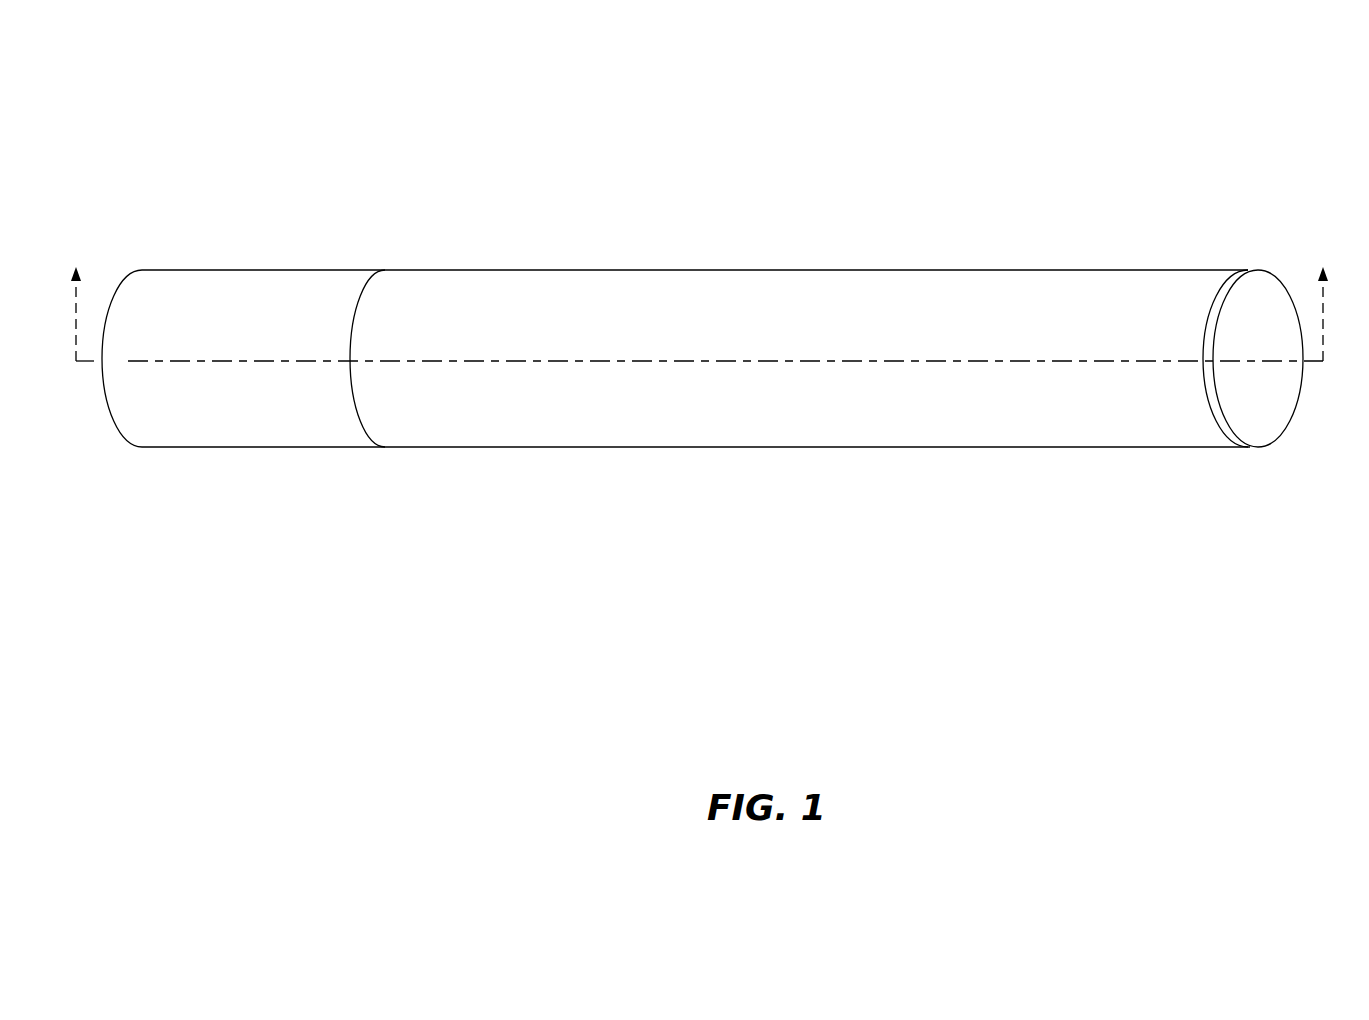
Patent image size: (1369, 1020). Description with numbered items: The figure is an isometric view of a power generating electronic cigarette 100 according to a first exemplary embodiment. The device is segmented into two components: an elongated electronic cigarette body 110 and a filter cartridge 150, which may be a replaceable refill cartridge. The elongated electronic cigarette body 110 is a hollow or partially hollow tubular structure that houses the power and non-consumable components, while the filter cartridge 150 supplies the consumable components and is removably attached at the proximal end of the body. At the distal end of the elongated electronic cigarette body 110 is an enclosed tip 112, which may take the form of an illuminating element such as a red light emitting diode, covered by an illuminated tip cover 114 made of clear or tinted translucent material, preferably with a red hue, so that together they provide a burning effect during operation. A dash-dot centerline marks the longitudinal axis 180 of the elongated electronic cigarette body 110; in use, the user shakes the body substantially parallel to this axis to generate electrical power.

The power generating electronic cigarette 100 is at (719, 280).
The elongated electronic cigarette body 110 is at (763, 415).
The enclosed tip 112 is at (1218, 415).
The illuminated tip cover 114 is at (1262, 415).
The filter cartridge 150 is at (237, 415).
The longitudinal axis 180 is at (695, 360).